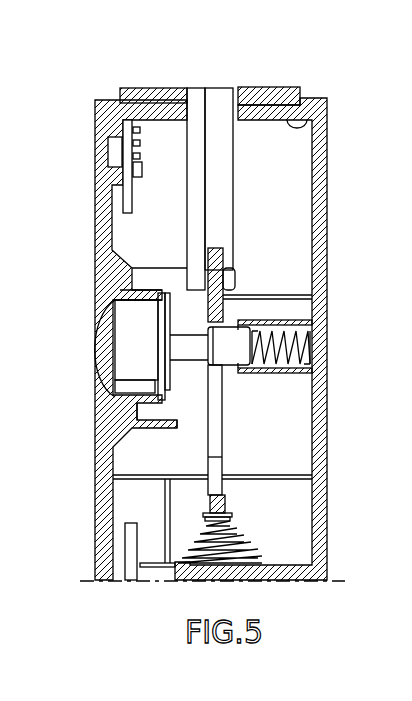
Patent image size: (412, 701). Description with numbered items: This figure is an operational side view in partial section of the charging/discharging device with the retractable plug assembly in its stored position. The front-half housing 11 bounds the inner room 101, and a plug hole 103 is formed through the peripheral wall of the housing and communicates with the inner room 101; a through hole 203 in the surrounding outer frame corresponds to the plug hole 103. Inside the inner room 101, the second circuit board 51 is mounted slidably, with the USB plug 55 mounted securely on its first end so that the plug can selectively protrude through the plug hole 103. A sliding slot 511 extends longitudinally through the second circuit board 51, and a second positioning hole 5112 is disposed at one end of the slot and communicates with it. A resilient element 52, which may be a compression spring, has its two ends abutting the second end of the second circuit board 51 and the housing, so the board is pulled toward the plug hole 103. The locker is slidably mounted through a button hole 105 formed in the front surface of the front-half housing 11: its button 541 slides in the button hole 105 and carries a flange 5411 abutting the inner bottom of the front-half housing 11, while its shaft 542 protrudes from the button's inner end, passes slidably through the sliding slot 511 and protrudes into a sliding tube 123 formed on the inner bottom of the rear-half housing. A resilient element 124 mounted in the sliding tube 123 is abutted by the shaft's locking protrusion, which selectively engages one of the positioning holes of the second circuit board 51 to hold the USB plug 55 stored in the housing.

The inner room 101 is at (327, 98).
The front-half housing 11 is at (100, 205).
The through hole 203 is at (186, 92).
The plug hole 103 is at (196, 104).
The USB plug 55 is at (220, 93).
The second circuit board 51 is at (223, 255).
The resilient element 124 is at (317, 327).
The sliding tube 123 is at (297, 368).
The button hole 105 is at (108, 305).
The button 541 is at (113, 343).
The flange 5411 is at (158, 380).
The shaft 542 is at (197, 348).
The sliding slot 511 is at (217, 433).
The second positioning hole 5112 is at (218, 488).
The resilient element 52 is at (253, 545).